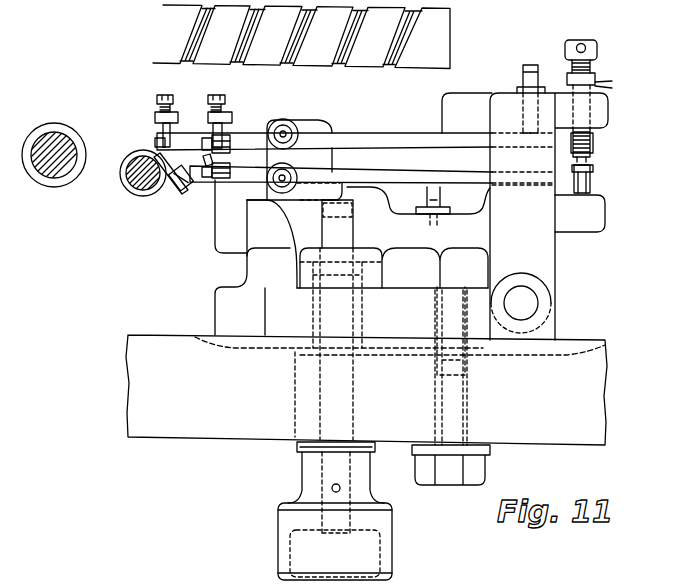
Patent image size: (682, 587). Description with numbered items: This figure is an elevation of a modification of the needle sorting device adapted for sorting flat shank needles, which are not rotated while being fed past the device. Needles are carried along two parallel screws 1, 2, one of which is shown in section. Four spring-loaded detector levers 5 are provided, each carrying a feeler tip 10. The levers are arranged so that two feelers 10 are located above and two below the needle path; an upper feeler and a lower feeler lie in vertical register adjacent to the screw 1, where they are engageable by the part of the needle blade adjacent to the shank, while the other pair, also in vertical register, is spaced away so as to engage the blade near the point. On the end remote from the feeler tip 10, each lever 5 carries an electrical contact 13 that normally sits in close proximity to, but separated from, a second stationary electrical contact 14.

The screw 1 is at (143, 187).
The screw 2 is at (55, 170).
The detector lever 5 is at (370, 133).
The feeler tip 10 is at (158, 155).
The electrical contact 13 is at (588, 168).
The stationary electrical contact 14 is at (590, 157).